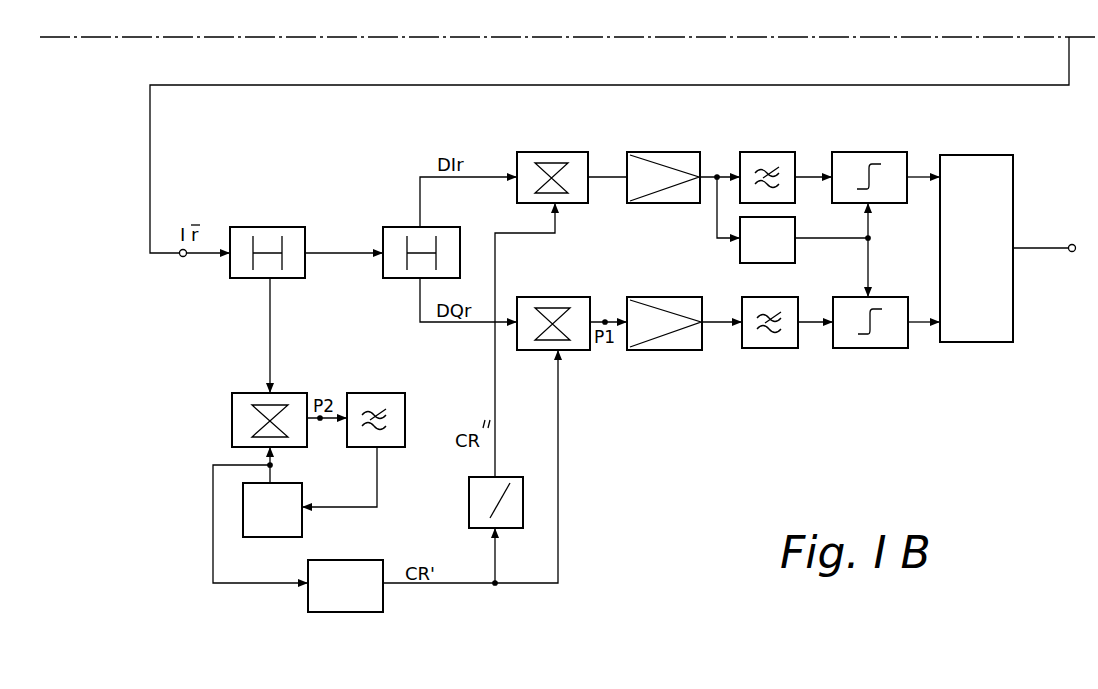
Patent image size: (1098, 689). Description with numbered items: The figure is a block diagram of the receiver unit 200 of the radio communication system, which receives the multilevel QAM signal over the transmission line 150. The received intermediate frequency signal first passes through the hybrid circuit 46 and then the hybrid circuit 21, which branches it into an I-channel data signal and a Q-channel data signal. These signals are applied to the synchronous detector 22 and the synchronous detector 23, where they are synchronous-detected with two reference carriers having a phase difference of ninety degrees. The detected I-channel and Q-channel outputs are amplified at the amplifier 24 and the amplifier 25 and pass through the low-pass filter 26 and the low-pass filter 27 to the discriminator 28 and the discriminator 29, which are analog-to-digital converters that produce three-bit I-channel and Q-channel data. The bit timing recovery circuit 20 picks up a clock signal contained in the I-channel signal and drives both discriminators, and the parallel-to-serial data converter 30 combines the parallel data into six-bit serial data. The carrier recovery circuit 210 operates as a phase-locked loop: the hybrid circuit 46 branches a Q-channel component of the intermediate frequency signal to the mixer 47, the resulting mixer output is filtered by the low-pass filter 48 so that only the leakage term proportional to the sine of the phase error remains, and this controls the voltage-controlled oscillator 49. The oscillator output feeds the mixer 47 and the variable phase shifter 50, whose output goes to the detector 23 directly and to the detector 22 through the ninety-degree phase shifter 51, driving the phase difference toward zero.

The transmission line 150 is at (577, 86).
The receiver unit 200 is at (290, 139).
The carrier recovery circuit 210 is at (206, 392).
The hybrid circuit 46 is at (279, 227).
The hybrid circuit 21 is at (450, 227).
The synchronous detector 22 is at (559, 152).
The synchronous detector 23 is at (570, 297).
The amplifier 24 is at (678, 152).
The amplifier 25 is at (678, 297).
The low-pass filter 26 is at (773, 152).
The low-pass filter 27 is at (788, 292).
The discriminator 28 is at (873, 149).
The discriminator 29 is at (854, 297).
The parallel-to-serial data converter 30 is at (985, 154).
The bit timing recovery circuit 20 is at (800, 223).
The mixer 47 is at (291, 392).
The low-pass filter 48 is at (393, 392).
The voltage-controlled oscillator 49 is at (297, 481).
The variable phase shifter 50 is at (374, 560).
The π/2 phase shifter 51 is at (512, 477).